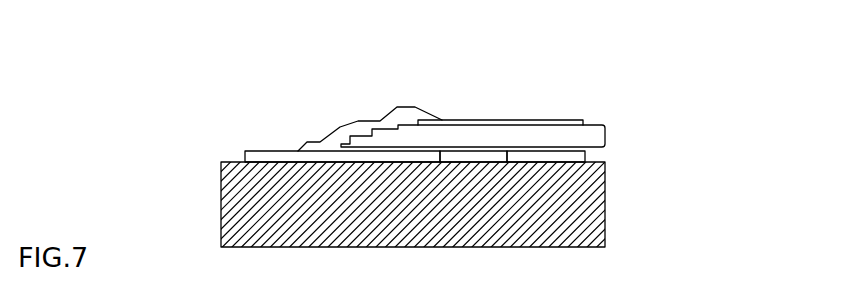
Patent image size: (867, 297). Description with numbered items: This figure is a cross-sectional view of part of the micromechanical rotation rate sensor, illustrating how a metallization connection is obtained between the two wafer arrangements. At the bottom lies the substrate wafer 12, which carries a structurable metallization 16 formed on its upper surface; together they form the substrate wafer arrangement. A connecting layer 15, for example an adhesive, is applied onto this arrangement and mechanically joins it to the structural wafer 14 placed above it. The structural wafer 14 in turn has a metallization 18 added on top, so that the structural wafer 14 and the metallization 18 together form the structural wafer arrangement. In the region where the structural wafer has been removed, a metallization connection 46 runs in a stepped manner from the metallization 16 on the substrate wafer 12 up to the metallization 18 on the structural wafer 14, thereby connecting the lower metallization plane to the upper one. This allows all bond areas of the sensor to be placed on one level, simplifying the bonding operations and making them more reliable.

The substrate wafer 12 is at (584, 223).
The structural wafer 14 is at (606, 127).
The connecting layer 15 is at (587, 149).
The metallization 16 is at (246, 158).
The metallization 18 is at (569, 120).
The metallization connection 46 is at (337, 128).